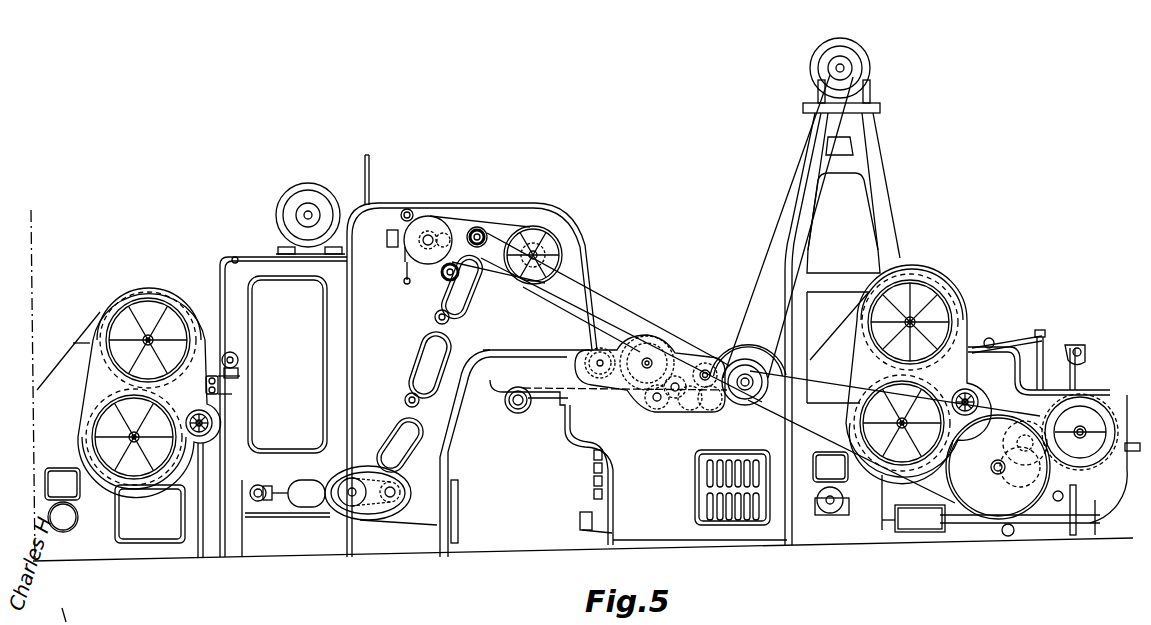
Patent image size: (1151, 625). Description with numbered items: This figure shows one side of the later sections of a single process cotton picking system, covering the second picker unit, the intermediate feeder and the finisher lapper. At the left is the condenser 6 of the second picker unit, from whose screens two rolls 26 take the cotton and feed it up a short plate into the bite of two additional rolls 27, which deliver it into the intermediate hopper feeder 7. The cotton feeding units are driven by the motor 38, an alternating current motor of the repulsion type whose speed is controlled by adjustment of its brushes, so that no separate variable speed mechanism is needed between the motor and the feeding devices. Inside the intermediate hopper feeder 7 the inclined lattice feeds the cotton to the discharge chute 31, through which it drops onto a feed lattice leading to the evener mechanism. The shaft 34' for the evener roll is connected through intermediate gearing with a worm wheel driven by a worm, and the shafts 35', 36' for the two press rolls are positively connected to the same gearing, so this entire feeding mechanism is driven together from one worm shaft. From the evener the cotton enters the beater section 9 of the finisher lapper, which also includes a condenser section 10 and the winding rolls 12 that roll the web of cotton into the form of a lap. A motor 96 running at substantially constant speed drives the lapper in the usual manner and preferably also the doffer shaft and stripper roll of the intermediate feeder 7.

The condenser 6 is at (144, 290).
The rolls 26 is at (96, 418).
The additional rolls 27 is at (214, 390).
The motor 38 is at (307, 192).
The intermediate hopper feeder 7 is at (373, 207).
The discharge chute 31 is at (594, 288).
The shaft 35' is at (576, 351).
The shaft 36' is at (651, 338).
The shaft 34' is at (701, 348).
The beater section 9 is at (730, 340).
The motor 96 is at (862, 66).
The condenser section 10 is at (941, 280).
The winding rolls 12 is at (1092, 436).